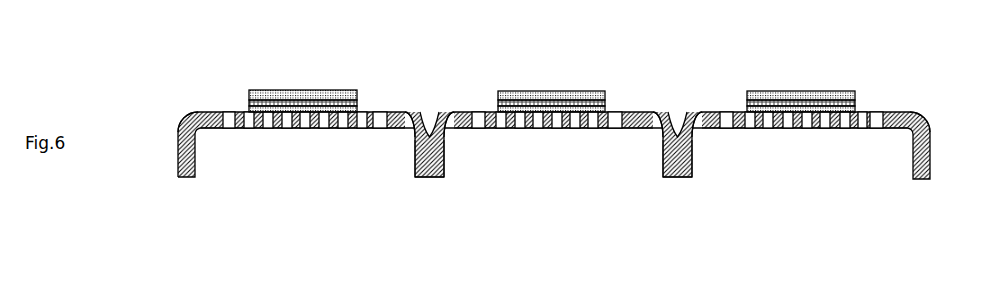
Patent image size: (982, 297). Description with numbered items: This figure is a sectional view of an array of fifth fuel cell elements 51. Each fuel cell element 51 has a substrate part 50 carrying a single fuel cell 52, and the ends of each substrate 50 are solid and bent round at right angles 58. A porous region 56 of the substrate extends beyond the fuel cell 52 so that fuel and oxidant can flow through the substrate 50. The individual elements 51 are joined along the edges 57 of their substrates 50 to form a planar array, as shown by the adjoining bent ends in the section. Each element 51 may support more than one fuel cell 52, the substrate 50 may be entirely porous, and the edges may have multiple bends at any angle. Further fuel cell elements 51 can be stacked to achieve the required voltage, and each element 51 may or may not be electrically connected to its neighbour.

The substrate part 50 is at (178, 170).
The fuel cell element 51 is at (232, 138).
The fuel cell 52 is at (305, 88).
The porous region 56 is at (289, 125).
The edges 57 is at (415, 165).
The right-angle bends 58 is at (188, 110).